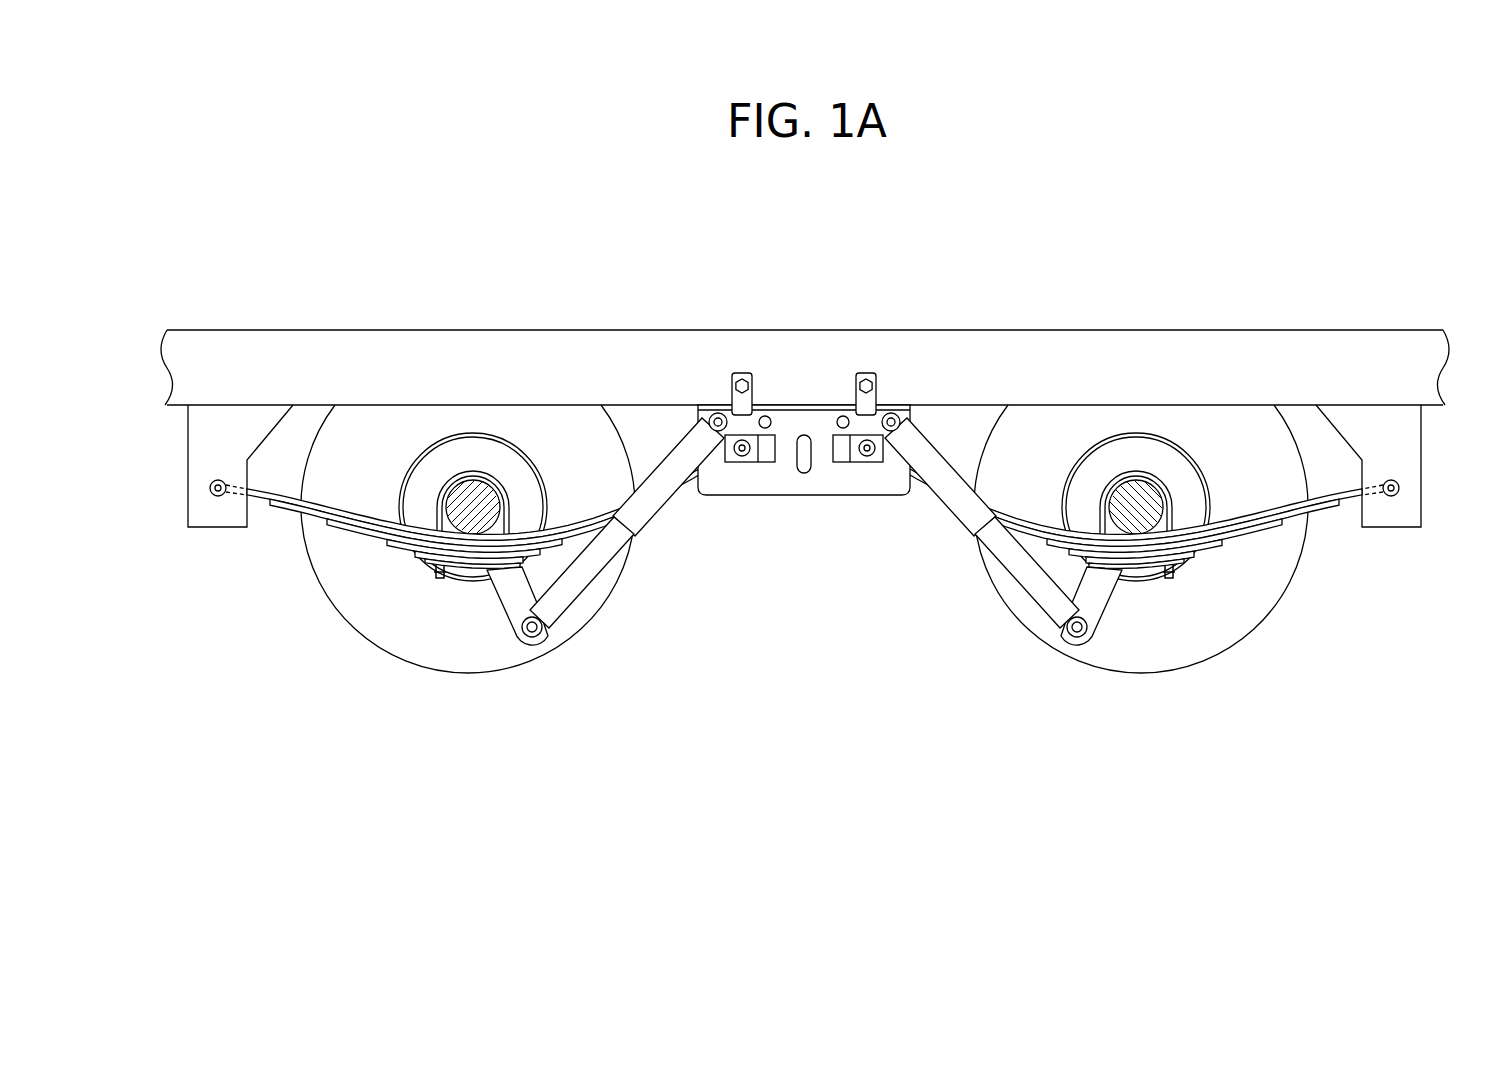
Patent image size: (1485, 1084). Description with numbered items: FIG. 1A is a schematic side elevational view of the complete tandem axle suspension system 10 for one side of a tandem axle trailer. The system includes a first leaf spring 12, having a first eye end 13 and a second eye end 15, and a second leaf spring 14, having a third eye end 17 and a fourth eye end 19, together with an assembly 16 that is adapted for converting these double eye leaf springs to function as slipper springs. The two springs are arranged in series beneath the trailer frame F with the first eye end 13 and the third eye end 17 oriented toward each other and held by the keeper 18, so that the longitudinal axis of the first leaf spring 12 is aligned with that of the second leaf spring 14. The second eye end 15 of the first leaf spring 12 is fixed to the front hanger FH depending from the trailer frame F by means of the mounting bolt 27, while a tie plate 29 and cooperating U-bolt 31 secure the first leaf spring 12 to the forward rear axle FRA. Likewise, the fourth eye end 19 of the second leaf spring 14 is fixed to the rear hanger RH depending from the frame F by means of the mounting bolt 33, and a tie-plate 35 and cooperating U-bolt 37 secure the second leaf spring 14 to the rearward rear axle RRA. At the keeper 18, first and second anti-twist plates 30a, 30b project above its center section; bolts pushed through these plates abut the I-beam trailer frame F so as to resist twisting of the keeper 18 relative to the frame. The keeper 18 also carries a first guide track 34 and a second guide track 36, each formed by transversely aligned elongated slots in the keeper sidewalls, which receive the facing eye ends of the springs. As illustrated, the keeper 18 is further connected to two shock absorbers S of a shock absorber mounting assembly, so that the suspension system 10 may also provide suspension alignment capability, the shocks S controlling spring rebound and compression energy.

The tandem axle suspension system 10 is at (480, 700).
The first leaf spring 12 is at (418, 556).
The first eye end 13 is at (745, 444).
The second leaf spring 14 is at (1210, 541).
The second eye end 15 is at (216, 497).
The assembly 16 is at (850, 600).
The third eye end 17 is at (868, 453).
The keeper 18 is at (770, 488).
The fourth eye end 19 is at (1397, 500).
The mounting bolt 27 is at (205, 492).
The tie plate 29 is at (457, 572).
The first anti-twist plate 30a is at (730, 393).
The second anti-twist plate 30b is at (878, 393).
The U-bolt 31 is at (488, 476).
The mounting bolt 33 is at (1386, 485).
The first guide track 34 is at (722, 472).
The tie-plate 35 is at (1141, 572).
The second guide track 36 is at (848, 473).
The U-bolt 37 is at (1110, 482).
The trailer frame F is at (665, 368).
The front hanger FH is at (208, 450).
The rear hanger RH is at (1378, 503).
The forward rear axle FRA is at (465, 502).
The rearward rear axle RRA is at (1140, 500).
The shock absorber S is at (600, 552).